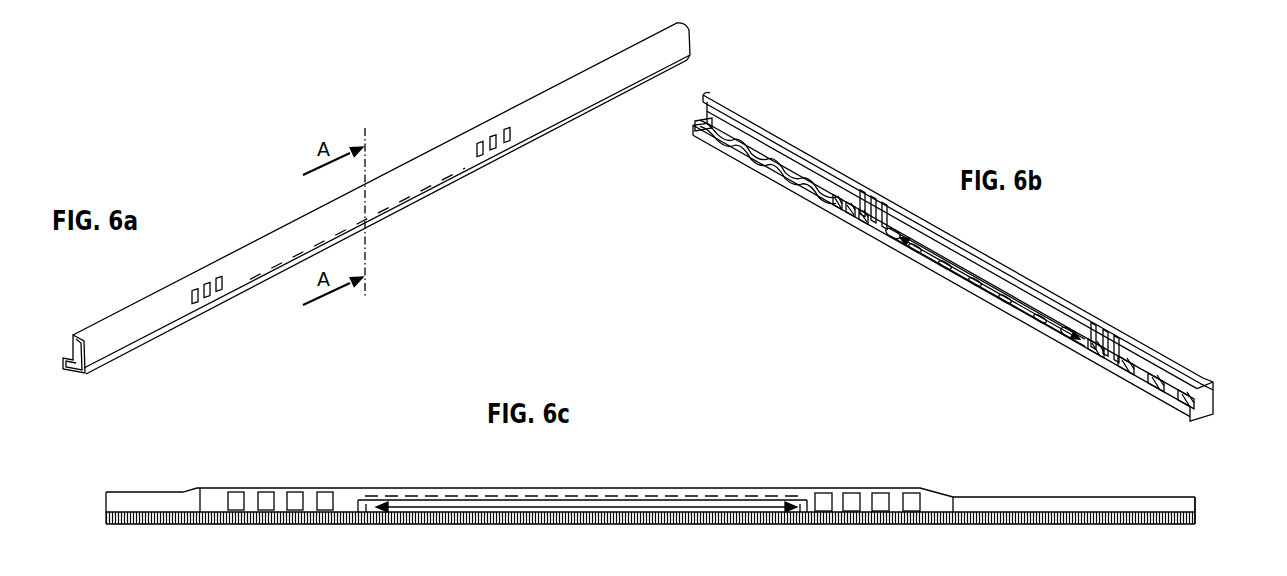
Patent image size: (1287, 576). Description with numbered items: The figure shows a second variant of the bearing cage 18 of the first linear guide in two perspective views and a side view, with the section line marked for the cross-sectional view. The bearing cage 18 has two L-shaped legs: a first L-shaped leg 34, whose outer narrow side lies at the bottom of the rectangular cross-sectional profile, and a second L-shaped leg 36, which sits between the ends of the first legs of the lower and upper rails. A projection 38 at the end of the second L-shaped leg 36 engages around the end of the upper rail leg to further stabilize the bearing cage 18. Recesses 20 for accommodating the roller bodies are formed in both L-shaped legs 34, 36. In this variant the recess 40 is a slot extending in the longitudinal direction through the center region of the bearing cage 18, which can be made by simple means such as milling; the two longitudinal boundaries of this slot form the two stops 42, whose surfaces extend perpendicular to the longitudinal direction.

In FIG. 6b, the bearing cage 18 is at (973, 268).
In FIG. 6c, the bearing cage 18 is at (650, 485).
In FIG. 6a, the recesses 20 is at (195, 305).
In FIG. 6b, the recesses 20 is at (884, 202).
In FIG. 6c, the recesses 20 is at (325, 492).
In FIG. 6a, the first L-shaped leg 34 is at (70, 374).
In FIG. 6b, the first L-shaped leg 34 is at (1205, 418).
In FIG. 6c, the first L-shaped leg 34 is at (1082, 497).
In FIG. 6a, the second L-shaped leg 36 is at (122, 349).
In FIG. 6b, the second L-shaped leg 36 is at (1214, 399).
In FIG. 6c, the second L-shaped leg 36 is at (1049, 527).
In FIG. 6a, the projection 38 is at (72, 336).
In FIG. 6b, the projection 38 is at (1203, 378).
In FIG. 6c, the projection 38 is at (1138, 527).
In FIG. 6b, the recess 40 is at (968, 287).
In FIG. 6c, the recess 40 is at (532, 526).
In FIG. 6b, the stops 42 is at (891, 240).
In FIG. 6c, the stops 42 is at (366, 526).